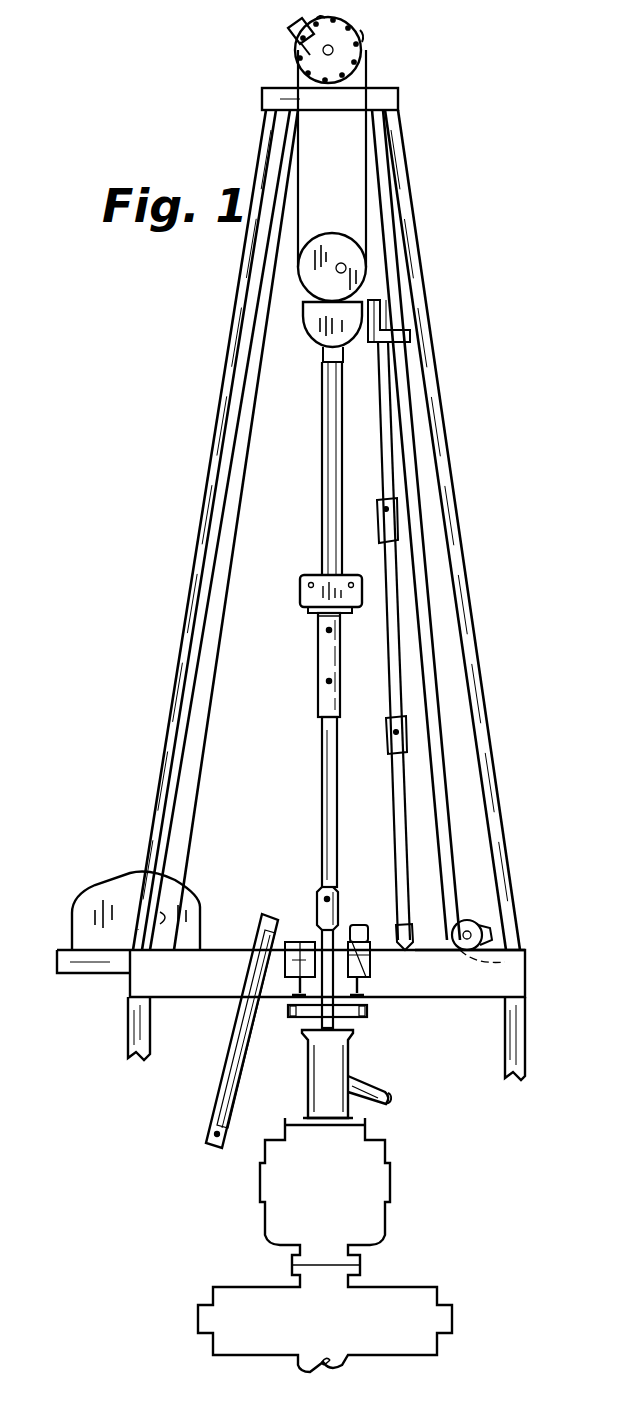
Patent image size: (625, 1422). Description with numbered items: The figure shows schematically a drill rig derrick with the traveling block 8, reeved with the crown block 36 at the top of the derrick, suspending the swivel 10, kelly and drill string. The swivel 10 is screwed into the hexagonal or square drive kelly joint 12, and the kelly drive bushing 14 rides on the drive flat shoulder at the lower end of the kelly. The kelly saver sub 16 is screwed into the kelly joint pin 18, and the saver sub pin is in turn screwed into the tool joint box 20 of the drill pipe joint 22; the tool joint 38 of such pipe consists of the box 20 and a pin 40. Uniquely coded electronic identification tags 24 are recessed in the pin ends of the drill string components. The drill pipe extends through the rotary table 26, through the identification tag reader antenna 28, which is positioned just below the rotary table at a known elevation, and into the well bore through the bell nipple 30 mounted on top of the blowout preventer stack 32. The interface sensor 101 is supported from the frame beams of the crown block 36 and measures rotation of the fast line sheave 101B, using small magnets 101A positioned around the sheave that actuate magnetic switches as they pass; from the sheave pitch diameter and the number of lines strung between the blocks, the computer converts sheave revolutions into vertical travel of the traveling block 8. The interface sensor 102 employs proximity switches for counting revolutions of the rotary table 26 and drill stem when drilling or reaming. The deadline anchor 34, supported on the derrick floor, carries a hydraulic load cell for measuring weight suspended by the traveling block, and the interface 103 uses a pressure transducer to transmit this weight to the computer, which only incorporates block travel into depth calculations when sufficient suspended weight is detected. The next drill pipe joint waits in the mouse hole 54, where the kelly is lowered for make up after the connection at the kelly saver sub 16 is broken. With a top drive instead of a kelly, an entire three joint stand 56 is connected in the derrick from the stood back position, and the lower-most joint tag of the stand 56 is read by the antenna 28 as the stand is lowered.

The traveling block 8 is at (437, 234).
The swivel 10 is at (305, 332).
The kelly joint 12 is at (318, 470).
The kelly drive bushing 14 is at (318, 570).
The kelly saver sub 16 is at (318, 652).
The kelly joint pin 18 is at (320, 623).
The tool joint box 20 is at (320, 708).
The drill pipe joint 22 is at (455, 440).
The electronic identification tags 24 is at (322, 632).
The rotary table 26 is at (362, 985).
The identification tag reader antenna 28 is at (292, 1018).
The bell nipple 30 is at (350, 1068).
The blowout preventer stack 32 is at (416, 1197).
The deadline anchor 34 is at (530, 977).
The crown block 36 is at (380, 58).
The tool joint 38 is at (298, 910).
The pin 40 is at (316, 890).
The mouse hole 54 is at (198, 1102).
The three joint stand 56 is at (405, 665).
The interface sensor 101 is at (290, 28).
The magnets 101A is at (335, 12).
The fast line sheave 101B is at (368, 36).
The interface sensor 102 is at (372, 962).
The interface 103 is at (482, 912).